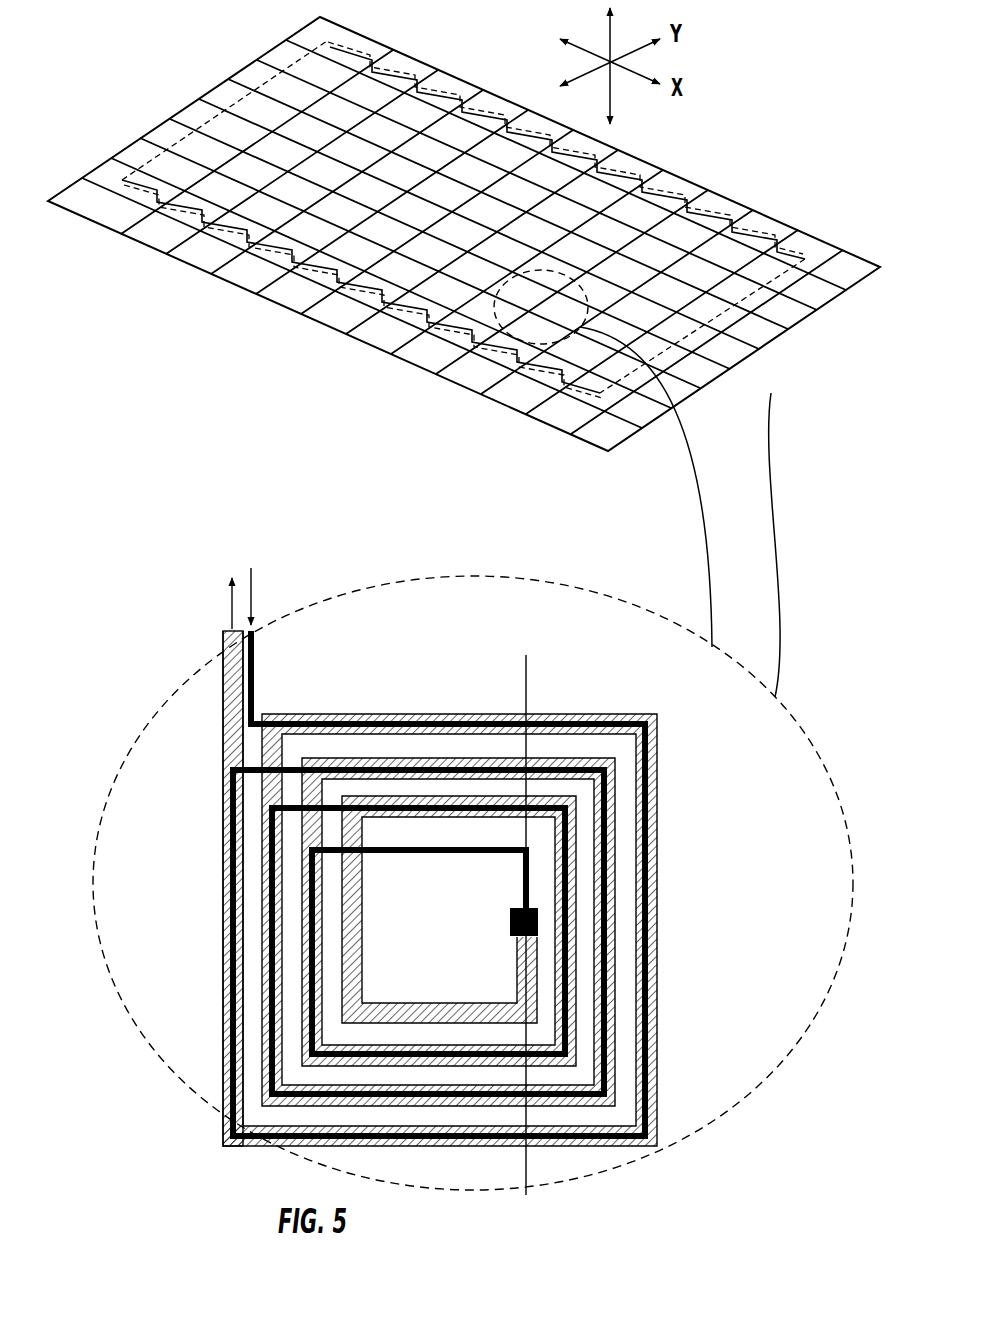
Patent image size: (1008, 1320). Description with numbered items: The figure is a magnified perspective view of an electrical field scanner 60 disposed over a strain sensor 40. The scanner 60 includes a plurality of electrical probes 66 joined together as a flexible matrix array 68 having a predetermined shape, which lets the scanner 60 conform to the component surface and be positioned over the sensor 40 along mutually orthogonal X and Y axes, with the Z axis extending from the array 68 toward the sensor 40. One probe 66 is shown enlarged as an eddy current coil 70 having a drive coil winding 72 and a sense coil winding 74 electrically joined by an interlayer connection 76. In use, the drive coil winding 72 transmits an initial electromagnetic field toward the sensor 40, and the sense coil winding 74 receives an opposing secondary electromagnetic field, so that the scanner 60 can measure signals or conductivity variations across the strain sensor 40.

The strain sensor 40 is at (225, 112).
The electrical field scanner 60 is at (112, 240).
The electrical probe 66 is at (580, 327).
The flexible matrix array 68 is at (232, 285).
The eddy current coil 70 is at (682, 876).
The drive coil winding 72 is at (255, 657).
The sense coil winding 74 is at (223, 717).
The interlayer connection 76 is at (510, 917).